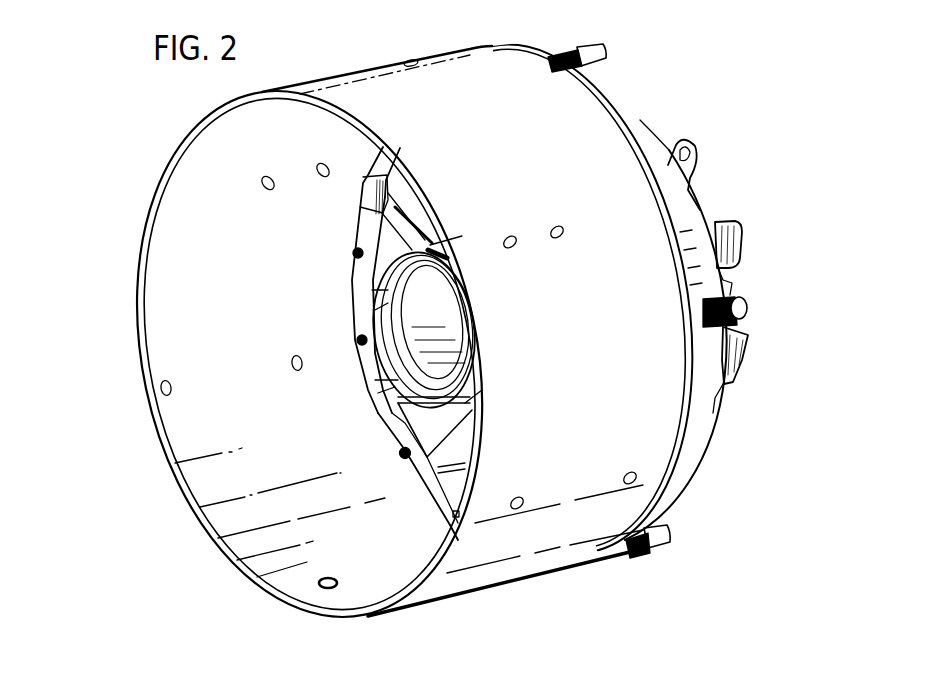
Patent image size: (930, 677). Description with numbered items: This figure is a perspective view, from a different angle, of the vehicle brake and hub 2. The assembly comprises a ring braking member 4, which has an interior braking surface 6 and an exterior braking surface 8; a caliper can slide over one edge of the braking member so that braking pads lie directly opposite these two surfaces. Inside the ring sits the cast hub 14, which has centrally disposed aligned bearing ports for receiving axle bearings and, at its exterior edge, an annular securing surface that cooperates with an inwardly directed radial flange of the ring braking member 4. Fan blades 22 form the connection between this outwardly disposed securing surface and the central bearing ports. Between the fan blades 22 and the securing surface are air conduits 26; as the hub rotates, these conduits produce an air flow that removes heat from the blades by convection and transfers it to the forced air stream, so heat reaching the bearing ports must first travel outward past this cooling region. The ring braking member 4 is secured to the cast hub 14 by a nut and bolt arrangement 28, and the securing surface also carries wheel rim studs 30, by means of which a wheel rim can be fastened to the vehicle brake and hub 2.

The vehicle brake and hub 2 is at (733, 152).
The ring braking member 4 is at (550, 120).
The interior braking surface 6 is at (183, 233).
The exterior braking surface 8 is at (640, 438).
The cast hub 14 is at (662, 158).
The fan blades 22 is at (742, 250).
The air conduits 26 is at (434, 426).
The nut and bolt arrangement 28 is at (401, 464).
The wheel rim studs 30 is at (607, 42).